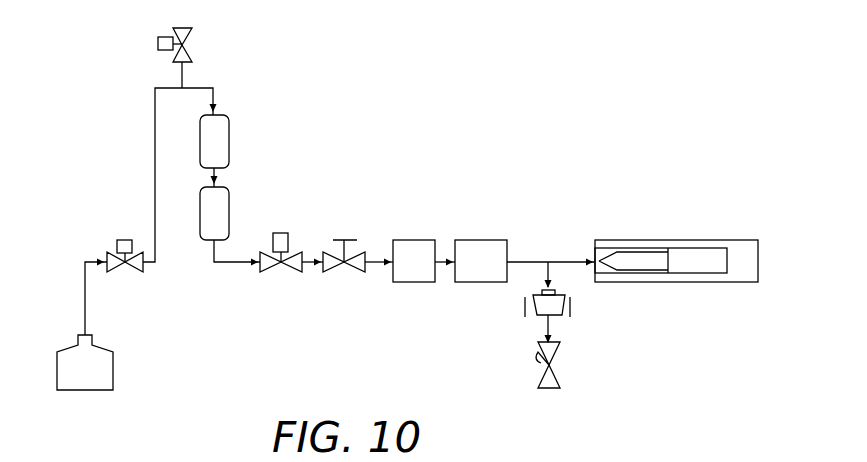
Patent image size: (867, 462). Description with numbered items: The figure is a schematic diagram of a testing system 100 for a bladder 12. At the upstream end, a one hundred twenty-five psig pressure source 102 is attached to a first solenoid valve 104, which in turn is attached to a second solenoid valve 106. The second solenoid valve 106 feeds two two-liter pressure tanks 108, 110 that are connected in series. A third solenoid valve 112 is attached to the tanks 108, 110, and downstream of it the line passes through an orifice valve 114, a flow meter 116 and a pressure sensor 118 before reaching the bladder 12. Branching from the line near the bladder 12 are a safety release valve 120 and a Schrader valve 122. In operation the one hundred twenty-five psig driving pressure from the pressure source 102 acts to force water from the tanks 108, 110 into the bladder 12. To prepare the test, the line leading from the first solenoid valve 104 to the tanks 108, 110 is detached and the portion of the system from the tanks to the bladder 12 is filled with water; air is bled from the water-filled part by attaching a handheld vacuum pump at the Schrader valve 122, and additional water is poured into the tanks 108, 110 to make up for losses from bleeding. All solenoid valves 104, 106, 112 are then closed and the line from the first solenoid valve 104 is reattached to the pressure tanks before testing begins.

The testing system 100 is at (530, 112).
The pressure source 102 is at (65, 365).
The first solenoid valve 104 is at (111, 257).
The second solenoid valve 106 is at (172, 62).
The pressure tank 108 is at (220, 130).
The pressure tank 110 is at (220, 200).
The third solenoid valve 112 is at (263, 272).
The orifice valve 114 is at (353, 270).
The flow meter 116 is at (400, 238).
The pressure sensor 118 is at (490, 238).
The safety release valve 120 is at (556, 307).
The Schrader valve 122 is at (554, 352).
The bladder 12 is at (633, 255).